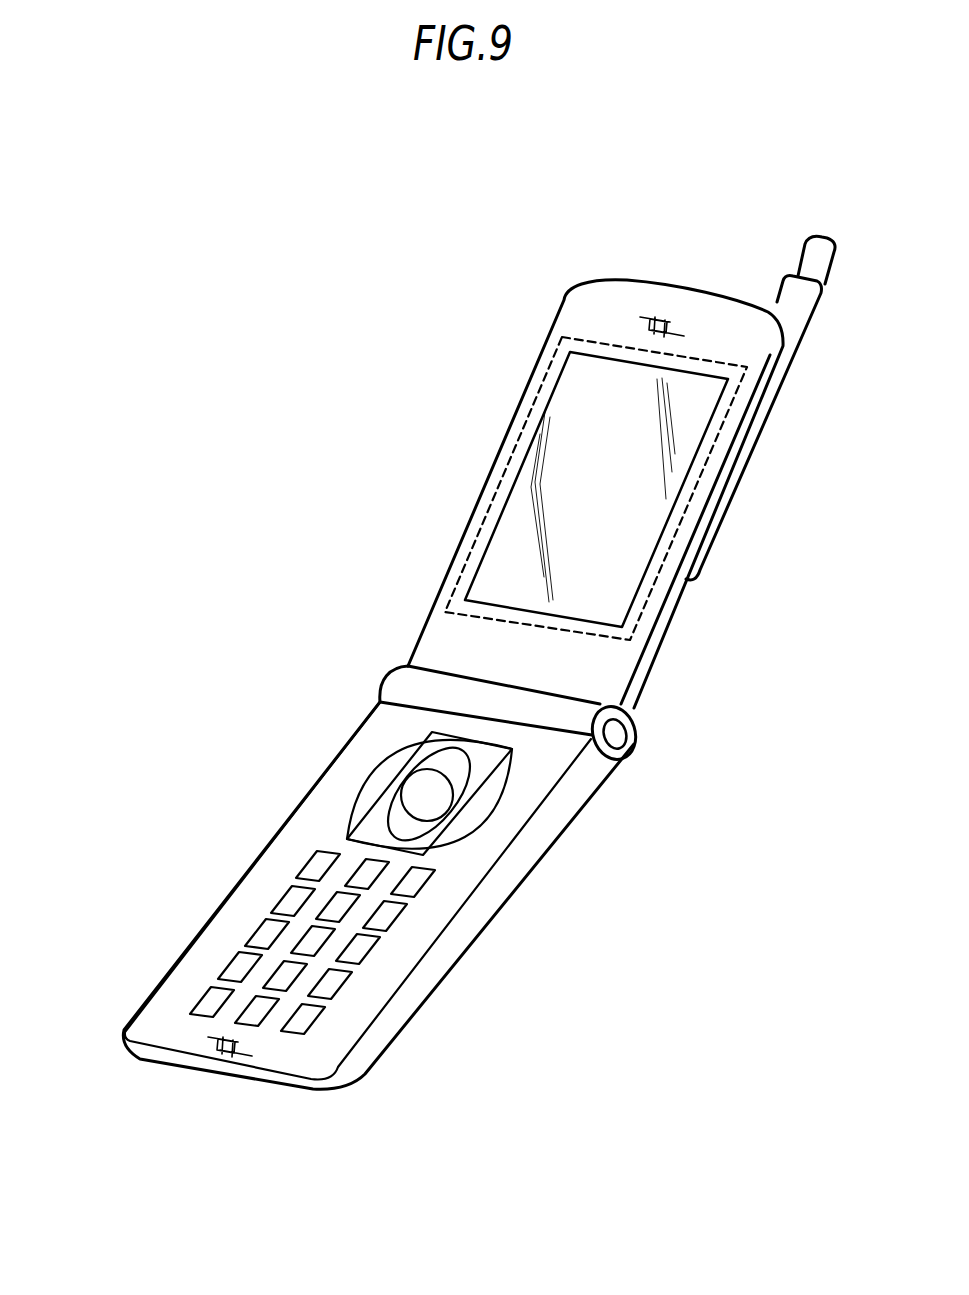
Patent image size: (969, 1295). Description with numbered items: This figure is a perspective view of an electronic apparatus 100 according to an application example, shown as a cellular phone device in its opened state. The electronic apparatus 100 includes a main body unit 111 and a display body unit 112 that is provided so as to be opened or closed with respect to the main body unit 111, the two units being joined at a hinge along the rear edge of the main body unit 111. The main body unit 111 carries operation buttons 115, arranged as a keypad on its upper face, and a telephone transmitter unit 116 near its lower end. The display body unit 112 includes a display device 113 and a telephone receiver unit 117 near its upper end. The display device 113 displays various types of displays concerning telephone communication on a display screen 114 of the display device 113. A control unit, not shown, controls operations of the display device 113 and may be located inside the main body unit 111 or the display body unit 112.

The electronic apparatus 100 is at (476, 271).
The main body unit 111 is at (337, 691).
The display body unit 112 is at (868, 244).
The display device 113 is at (485, 457).
The display screen 114 is at (712, 384).
The operation buttons 115 is at (249, 1003).
The telephone transmitter unit 116 is at (215, 1042).
The telephone receiver unit 117 is at (649, 310).